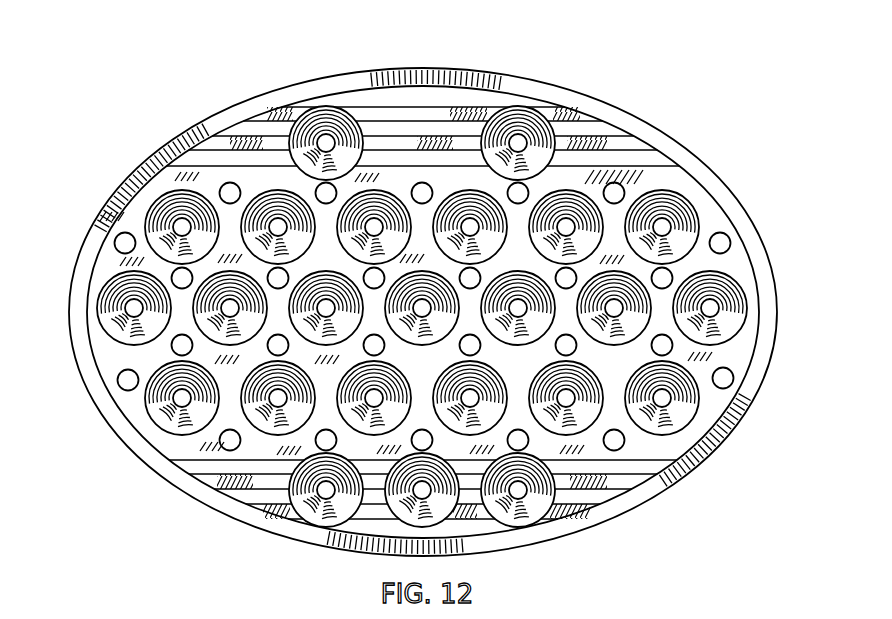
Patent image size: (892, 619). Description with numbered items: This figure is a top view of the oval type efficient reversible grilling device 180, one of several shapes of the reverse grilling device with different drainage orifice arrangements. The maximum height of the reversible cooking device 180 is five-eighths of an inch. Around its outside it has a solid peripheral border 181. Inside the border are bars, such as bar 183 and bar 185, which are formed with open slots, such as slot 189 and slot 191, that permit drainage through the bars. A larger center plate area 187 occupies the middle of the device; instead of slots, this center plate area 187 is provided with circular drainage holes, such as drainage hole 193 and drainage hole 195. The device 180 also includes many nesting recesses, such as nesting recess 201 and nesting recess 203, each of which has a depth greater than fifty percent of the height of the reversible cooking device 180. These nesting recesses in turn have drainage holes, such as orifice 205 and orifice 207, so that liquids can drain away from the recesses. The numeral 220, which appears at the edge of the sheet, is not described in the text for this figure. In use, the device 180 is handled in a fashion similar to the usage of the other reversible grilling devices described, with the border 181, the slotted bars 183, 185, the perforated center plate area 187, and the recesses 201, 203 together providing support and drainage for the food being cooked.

The oval type efficient reversible grilling device 180 is at (735, 189).
The solid peripheral border 181 is at (688, 152).
The bar 183 is at (552, 112).
The bar 185 is at (578, 517).
The center plate area 187 is at (702, 365).
The slot 189 is at (353, 98).
The slot 191 is at (242, 132).
The drainage hole 193 is at (116, 246).
The drainage hole 195 is at (118, 378).
The nesting recess 201 is at (172, 423).
The nesting recess 203 is at (303, 517).
The orifice 205 is at (183, 400).
The orifice 207 is at (323, 490).
The spray head 220 is at (757, 618).